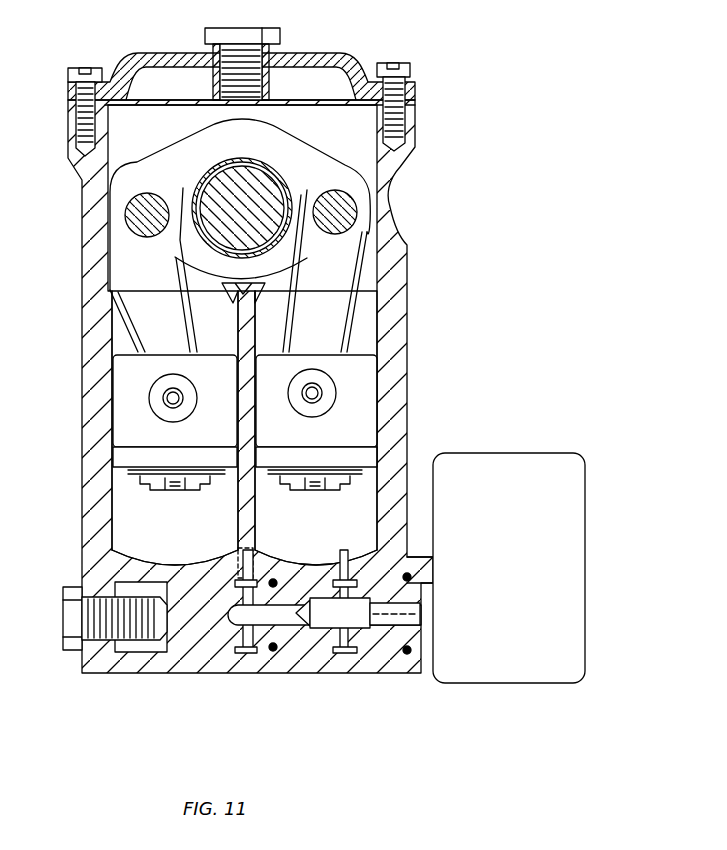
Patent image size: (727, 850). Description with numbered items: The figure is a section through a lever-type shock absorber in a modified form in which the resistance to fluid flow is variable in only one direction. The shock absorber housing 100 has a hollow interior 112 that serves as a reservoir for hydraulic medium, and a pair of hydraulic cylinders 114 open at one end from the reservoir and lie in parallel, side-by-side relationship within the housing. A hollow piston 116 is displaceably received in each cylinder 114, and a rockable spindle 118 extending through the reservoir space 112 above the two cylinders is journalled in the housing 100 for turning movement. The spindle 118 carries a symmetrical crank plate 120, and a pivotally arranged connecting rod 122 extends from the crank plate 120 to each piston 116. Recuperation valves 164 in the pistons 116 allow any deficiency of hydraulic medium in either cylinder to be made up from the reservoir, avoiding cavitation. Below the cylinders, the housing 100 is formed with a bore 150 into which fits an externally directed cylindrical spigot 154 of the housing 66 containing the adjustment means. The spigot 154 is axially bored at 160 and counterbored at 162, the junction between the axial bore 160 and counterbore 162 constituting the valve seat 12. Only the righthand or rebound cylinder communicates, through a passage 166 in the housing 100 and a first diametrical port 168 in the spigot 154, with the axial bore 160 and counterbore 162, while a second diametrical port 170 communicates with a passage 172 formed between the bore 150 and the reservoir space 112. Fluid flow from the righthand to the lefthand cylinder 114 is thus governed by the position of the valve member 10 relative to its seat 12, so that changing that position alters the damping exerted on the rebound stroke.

The housing 100 is at (86, 258).
The hollow interior 112 is at (346, 132).
The rockable spindle 118 is at (230, 163).
The crank plate 120 is at (183, 166).
The connecting rod 122 is at (307, 335).
The hollow piston 116 is at (277, 397).
The hydraulic cylinder 114 is at (133, 505).
The recuperation valve 164 is at (180, 491).
The passage 172 is at (240, 548).
The second diametrical port 170 is at (255, 654).
The counterbore 162 is at (332, 580).
The axial bore 160 is at (276, 580).
The valve seat 12 is at (308, 618).
The valve member 10 is at (360, 621).
The cylindrical spigot 154 is at (147, 640).
The bore 150 is at (112, 640).
The passage 166 is at (433, 557).
The first diametrical port 168 is at (433, 583).
The housing 66 is at (514, 526).